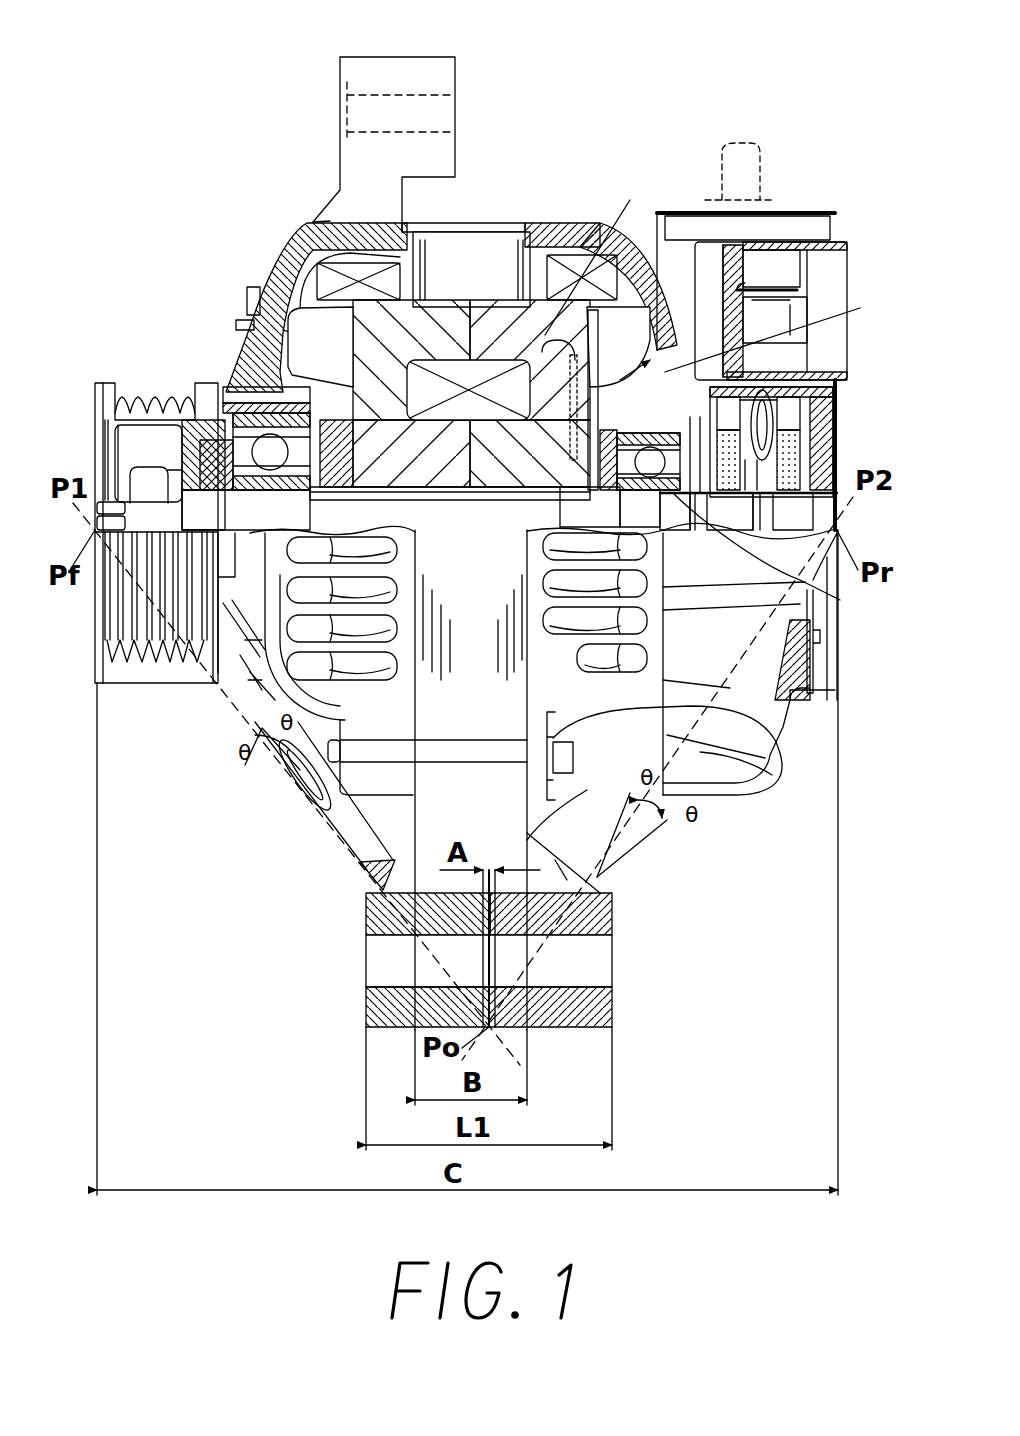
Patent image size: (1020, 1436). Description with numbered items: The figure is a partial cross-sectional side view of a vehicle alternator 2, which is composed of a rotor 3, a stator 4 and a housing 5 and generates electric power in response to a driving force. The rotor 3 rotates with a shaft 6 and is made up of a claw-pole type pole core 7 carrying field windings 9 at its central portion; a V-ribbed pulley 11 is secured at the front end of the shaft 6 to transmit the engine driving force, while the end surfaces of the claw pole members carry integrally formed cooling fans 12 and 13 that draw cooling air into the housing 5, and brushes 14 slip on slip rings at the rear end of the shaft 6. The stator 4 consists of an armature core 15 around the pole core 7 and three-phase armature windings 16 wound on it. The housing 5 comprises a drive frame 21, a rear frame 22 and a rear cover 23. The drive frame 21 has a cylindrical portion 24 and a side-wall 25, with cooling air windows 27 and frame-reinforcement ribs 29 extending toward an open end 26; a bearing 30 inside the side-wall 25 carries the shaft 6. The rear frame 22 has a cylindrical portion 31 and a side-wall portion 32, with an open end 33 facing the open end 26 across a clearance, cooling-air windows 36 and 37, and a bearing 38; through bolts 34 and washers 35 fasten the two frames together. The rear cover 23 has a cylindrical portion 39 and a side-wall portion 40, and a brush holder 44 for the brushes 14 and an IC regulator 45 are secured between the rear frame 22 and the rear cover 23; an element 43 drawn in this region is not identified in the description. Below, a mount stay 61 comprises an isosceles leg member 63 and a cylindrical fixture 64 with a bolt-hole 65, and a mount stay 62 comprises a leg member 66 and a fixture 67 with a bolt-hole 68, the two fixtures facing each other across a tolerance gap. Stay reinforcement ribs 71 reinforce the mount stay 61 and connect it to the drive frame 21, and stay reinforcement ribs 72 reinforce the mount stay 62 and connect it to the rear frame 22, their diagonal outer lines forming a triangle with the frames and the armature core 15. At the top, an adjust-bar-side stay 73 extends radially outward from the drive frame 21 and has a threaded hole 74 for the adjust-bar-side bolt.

The alternator 2 is at (716, 78).
The rotor 3 is at (780, 329).
The stator 4 is at (240, 330).
The housing 5 is at (268, 264).
The shaft 6 is at (195, 515).
The pole core 7 is at (270, 445).
The field windings 9 is at (592, 253).
The V-ribbed pulley 11 is at (160, 558).
The cooling fan 12 is at (439, 393).
The cooling fan 13 is at (618, 347).
The brushes 14 is at (815, 452).
The armature core 15 is at (471, 269).
The three-phase armature windings 16 is at (325, 295).
The drive frame 21 is at (330, 232).
The rear frame 22 is at (598, 265).
The rear cover 23 is at (835, 238).
The cylindrical portion 24 is at (370, 235).
The side-wall 25 is at (257, 308).
The open end 26 is at (418, 225).
The cooling air windows 27 is at (397, 546).
The frame-reinforcement ribs 29 is at (262, 692).
The bearing 30 is at (250, 430).
The cylindrical portion 31 is at (555, 232).
The side-wall portion 32 is at (658, 205).
The open end 33 is at (518, 228).
The through bolts 34 is at (740, 760).
The washers 35 is at (782, 730).
The cooling-air windows 36 is at (571, 776).
The cooling-air windows 37 is at (800, 290).
The bearing 38 is at (798, 592).
The cylindrical portion 39 is at (690, 215).
The side-wall portion 40 is at (812, 662).
The brush holder 43 is at (787, 432).
The brush holder 44 is at (830, 355).
The IC regulator 45 is at (775, 270).
The mount stay 61 is at (368, 1005).
The mount stay 62 is at (612, 1005).
The leg member 63 is at (360, 858).
The fixture 64 is at (375, 917).
The bolt-hole 65 is at (380, 962).
The leg member 66 is at (600, 895).
The fixture 67 is at (595, 922).
The bolt-hole 68 is at (595, 962).
The stay reinforcement ribs 71 is at (370, 886).
The stay reinforcement ribs 72 is at (590, 870).
The adjust-bar-side stay 73 is at (402, 57).
The threaded hole 74 is at (352, 95).